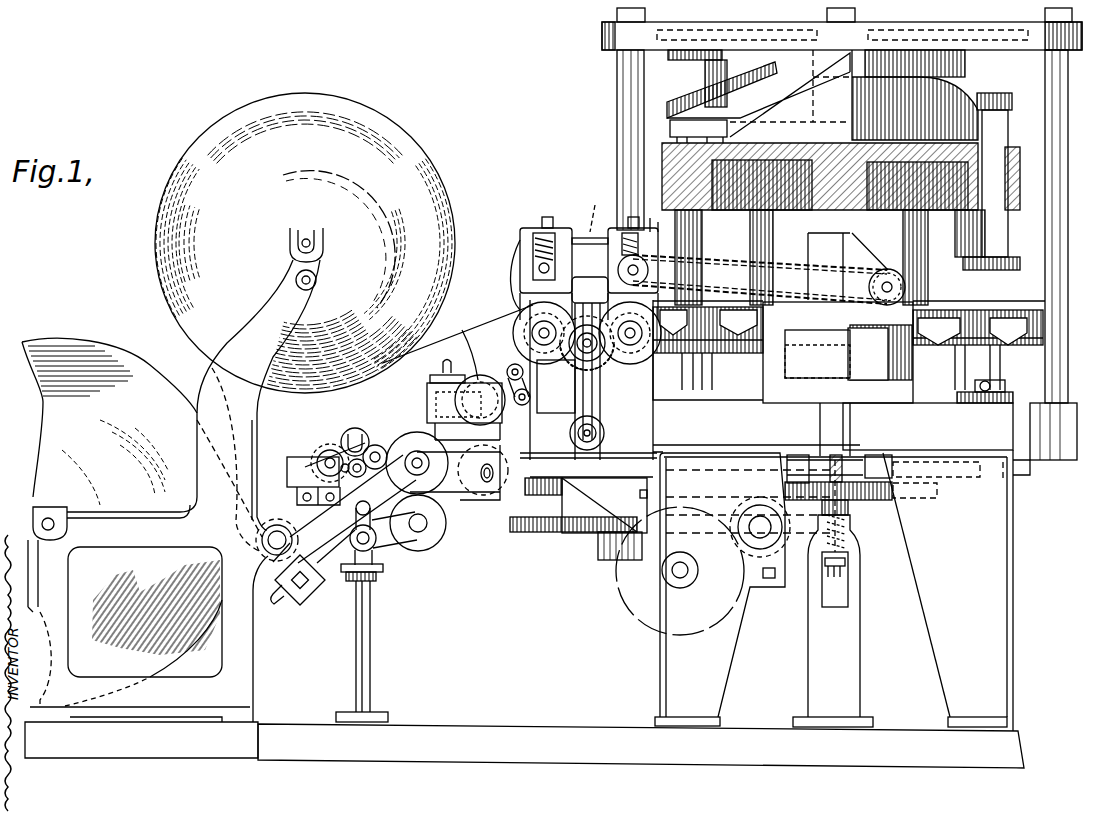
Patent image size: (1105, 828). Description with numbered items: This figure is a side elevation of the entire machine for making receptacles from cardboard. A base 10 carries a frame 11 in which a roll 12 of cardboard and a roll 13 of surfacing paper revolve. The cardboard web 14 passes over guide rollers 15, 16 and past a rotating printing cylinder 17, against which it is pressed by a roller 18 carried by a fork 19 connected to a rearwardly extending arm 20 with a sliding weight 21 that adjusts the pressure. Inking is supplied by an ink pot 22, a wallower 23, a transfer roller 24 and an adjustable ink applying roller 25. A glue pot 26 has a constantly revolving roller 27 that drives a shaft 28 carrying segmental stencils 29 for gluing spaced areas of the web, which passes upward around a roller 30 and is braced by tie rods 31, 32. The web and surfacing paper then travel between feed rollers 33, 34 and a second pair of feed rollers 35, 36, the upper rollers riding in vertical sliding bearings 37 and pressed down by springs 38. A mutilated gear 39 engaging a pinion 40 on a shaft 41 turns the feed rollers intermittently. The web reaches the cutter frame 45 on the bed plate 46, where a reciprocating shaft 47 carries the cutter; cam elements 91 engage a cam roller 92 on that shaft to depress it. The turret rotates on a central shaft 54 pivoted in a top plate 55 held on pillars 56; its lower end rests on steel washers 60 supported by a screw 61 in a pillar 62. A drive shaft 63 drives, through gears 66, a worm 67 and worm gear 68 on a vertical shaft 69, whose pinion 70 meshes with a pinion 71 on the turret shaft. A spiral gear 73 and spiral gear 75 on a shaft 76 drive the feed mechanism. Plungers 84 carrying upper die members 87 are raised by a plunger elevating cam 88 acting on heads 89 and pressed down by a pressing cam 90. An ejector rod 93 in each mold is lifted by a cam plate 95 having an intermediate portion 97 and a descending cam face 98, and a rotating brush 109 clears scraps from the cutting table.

The base 10 is at (398, 728).
The frame 11 is at (240, 414).
The roll of cardboard 12 is at (128, 358).
The roll of surfacing paper 13 is at (350, 105).
The web 14 is at (296, 545).
The guide roller 15 is at (280, 526).
The guide roller 16 is at (345, 510).
The printing cylinder 17 is at (412, 432).
The roller 18 is at (414, 548).
The fork 19 is at (390, 555).
The arm 20 is at (322, 575).
The sliding weight 21 is at (296, 597).
The ink pot 22 is at (292, 460).
The wallower 23 is at (325, 450).
The transfer roller 24 is at (353, 428).
The ink applying roller 25 is at (377, 445).
The glue pot 26 is at (470, 378).
The roller 27 is at (471, 346).
The shaft 28 is at (480, 400).
The segmental stencils 29 is at (510, 365).
The roller 30 is at (478, 498).
The tie rod 31 is at (548, 370).
The tie rod 32 is at (570, 433).
The feed roller 33 is at (518, 300).
The feed roller 34 is at (526, 238).
The feed roller 35 is at (660, 355).
The feed roller 36 is at (624, 252).
The vertical sliding bearings 37 is at (580, 236).
The springs 38 is at (630, 170).
The mutilated gear 39 is at (560, 500).
The pinion 40 is at (580, 362).
The shaft 41 is at (590, 368).
The frame 45 is at (893, 395).
The bed plate 46 is at (1010, 435).
The reciprocating shaft 47 is at (817, 361).
The central shaft 54 is at (841, 176).
The top plate 55 is at (978, 20).
The pillars 56 is at (1045, 70).
The steel washers 60 is at (850, 540).
The screw 61 is at (848, 558).
The pillar 62 is at (850, 642).
The drive shaft 63 is at (680, 578).
The gears 66 is at (740, 570).
The worm 67 is at (790, 560).
The worm gear 68 is at (575, 535).
The vertical shaft 69 is at (620, 96).
The pinion 70 is at (568, 500).
The pinion 71 is at (862, 500).
The spiral gear 73 is at (828, 462).
The spiral gear 75 is at (545, 494).
The shaft 76 is at (655, 432).
The plungers 84 is at (675, 218).
The upper die member 87 is at (1000, 265).
The plunger elevating cam 88 is at (822, 95).
The head 89 is at (670, 126).
The pressing cam 90 is at (730, 50).
The cam elements 91 is at (1035, 310).
The cam roller 92 is at (848, 352).
The ejector rod 93 is at (690, 392).
The cam plate 95 is at (995, 395).
The intermediate portion 97 is at (996, 396).
The descending cam face 98 is at (984, 392).
The rotating brush 109 is at (888, 275).